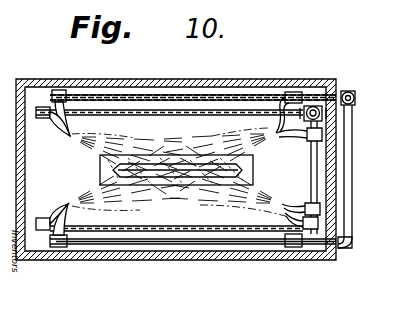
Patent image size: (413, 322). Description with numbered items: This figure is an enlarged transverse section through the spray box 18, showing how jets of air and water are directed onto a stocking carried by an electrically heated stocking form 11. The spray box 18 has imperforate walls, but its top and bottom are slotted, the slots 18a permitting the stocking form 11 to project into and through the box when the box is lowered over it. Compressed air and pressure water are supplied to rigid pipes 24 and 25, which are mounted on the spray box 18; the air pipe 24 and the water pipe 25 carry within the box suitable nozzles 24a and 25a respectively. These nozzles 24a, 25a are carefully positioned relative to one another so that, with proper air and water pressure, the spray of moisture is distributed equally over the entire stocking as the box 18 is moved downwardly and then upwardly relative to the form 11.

The spray box 18 is at (247, 81).
The slot 18a is at (170, 155).
The electrically heated stocking form 11 is at (194, 165).
The air pipe 24 is at (316, 106).
The nozzle 24a is at (46, 207).
The water pipe 25 is at (356, 99).
The nozzle 25a is at (88, 122).